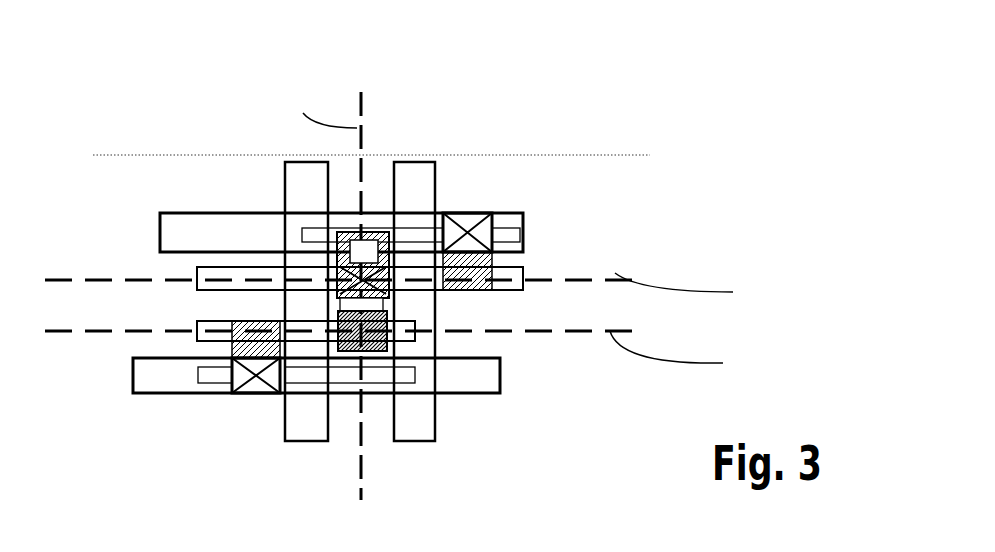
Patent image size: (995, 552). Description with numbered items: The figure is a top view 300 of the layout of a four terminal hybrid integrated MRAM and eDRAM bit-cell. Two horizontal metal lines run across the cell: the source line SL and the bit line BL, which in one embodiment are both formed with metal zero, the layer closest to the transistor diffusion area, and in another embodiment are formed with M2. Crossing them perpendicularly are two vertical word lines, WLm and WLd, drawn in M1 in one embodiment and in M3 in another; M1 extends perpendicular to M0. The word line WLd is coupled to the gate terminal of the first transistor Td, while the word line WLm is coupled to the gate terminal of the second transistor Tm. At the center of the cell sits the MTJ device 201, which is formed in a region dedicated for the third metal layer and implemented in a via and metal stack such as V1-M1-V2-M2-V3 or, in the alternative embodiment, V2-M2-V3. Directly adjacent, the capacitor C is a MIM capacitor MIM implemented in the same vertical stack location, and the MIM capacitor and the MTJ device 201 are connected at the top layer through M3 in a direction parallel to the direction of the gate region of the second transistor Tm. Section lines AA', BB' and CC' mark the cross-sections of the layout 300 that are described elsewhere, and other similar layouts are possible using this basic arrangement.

The top view of a layout 300 is at (70, 85).
The MTJ device 201 is at (338, 320).
The bit line BL is at (523, 218).
The source line SL is at (490, 372).
The word line WLm is at (283, 420).
The word line WLd is at (427, 418).
The first transistor Td is at (490, 290).
The second transistor Tm is at (227, 348).
The MIM capacitor MIM is at (376, 268).